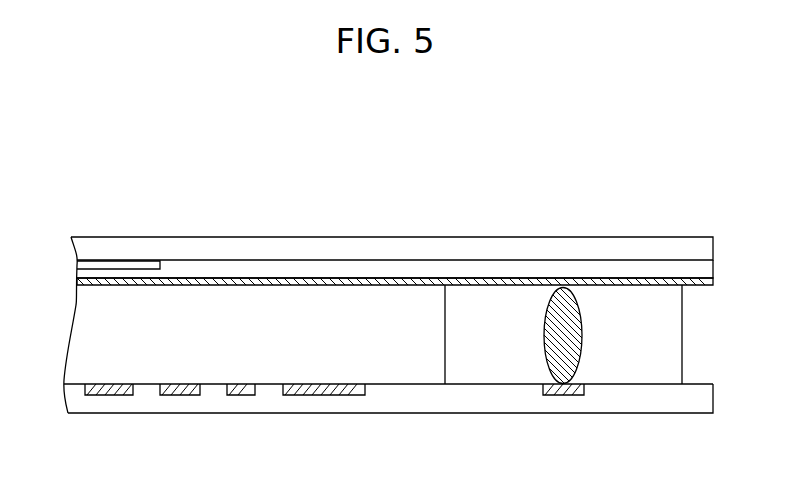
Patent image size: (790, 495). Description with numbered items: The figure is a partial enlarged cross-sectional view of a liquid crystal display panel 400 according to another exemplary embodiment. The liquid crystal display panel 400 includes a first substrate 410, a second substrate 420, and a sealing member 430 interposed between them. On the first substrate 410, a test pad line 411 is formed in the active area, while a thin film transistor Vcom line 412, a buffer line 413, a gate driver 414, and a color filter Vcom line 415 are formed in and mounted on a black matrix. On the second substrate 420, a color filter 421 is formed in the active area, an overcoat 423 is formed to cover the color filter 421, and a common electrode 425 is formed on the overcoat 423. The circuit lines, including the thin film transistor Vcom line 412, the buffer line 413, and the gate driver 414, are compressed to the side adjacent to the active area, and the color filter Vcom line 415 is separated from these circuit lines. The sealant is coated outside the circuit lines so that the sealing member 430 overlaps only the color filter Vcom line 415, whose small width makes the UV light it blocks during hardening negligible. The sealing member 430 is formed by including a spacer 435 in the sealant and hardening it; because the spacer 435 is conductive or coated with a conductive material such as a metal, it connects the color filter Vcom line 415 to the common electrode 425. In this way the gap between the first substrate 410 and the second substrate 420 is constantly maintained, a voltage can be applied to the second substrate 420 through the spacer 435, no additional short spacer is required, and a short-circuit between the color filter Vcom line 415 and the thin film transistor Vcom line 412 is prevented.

The liquid crystal display panel 400 is at (375, 147).
The first substrate 410 is at (680, 400).
The test pad line 411 is at (103, 395).
The thin film transistor Vcom line 412 is at (178, 395).
The buffer line 413 is at (240, 395).
The gate driver 414 is at (318, 395).
The color filter Vcom line 415 is at (560, 395).
The second substrate 420 is at (482, 248).
The color filter 421 is at (123, 263).
The overcoat 423 is at (242, 268).
The common electrode 425 is at (363, 278).
The sealing member 430 is at (668, 333).
The spacer 435 is at (577, 352).